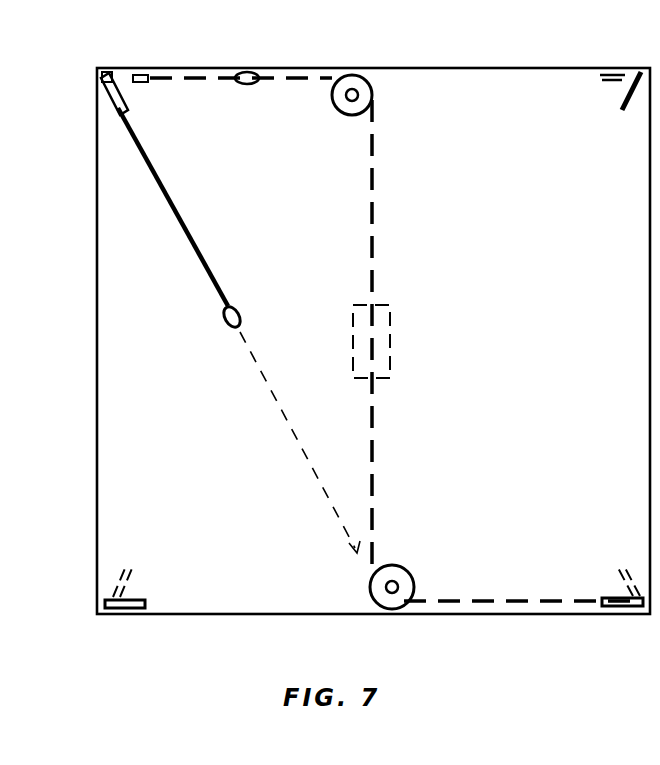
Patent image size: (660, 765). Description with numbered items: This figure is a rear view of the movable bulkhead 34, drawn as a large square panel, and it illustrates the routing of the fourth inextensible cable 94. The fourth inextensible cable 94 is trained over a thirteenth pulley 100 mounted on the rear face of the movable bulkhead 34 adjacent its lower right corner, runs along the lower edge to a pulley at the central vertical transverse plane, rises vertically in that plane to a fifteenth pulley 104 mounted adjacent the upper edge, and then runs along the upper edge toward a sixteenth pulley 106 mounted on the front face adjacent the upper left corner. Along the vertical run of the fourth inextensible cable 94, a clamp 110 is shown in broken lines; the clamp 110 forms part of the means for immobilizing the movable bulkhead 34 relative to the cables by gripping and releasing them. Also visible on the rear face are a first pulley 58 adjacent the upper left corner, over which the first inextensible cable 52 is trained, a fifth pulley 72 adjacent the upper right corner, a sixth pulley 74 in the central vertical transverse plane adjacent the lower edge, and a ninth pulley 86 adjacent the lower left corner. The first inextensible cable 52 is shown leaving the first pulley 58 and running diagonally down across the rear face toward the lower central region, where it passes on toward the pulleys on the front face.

The movable bulkhead 34 is at (96, 392).
The first inextensible cable 52 is at (212, 285).
The first pulley 58 is at (126, 102).
The fifth pulley 72 is at (622, 100).
The sixth pulley 74 is at (398, 567).
The ninth pulley 86 is at (140, 598).
The fourth inextensible cable 94 is at (374, 240).
The thirteenth pulley 100 is at (620, 598).
The fifteenth pulley 104 is at (348, 114).
The sixteenth pulley 106 is at (133, 74).
The clamp 110 is at (395, 360).